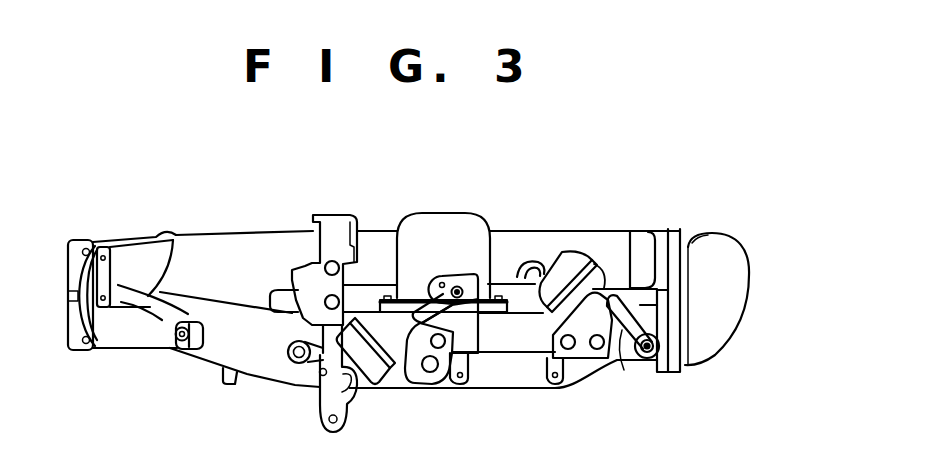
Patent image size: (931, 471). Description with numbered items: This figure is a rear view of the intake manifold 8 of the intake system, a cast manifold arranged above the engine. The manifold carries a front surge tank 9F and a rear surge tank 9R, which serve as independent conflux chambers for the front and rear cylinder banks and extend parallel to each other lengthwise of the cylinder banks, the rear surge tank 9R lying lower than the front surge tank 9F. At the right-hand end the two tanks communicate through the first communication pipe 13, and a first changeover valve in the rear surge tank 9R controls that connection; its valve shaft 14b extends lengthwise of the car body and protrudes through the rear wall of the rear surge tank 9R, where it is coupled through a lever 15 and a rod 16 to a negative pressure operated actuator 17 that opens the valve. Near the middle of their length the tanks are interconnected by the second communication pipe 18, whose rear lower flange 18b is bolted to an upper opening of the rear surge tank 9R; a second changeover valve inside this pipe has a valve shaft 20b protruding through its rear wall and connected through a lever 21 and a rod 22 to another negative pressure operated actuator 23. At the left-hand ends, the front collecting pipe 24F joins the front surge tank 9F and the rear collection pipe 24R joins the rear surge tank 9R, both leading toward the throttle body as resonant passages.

The intake manifold 8 is at (221, 234).
The front collecting pipe 24F is at (258, 234).
The rear collection pipe 24R is at (250, 378).
The negative pressure operated actuator 23 is at (373, 388).
The rod 22 is at (406, 370).
The rear lower flange 18b is at (496, 314).
The valve shaft 20b is at (430, 280).
The lever 21 is at (460, 282).
The second communication pipe 18 is at (443, 212).
The front surge tank 9F is at (533, 231).
The rear surge tank 9R is at (516, 388).
The negative pressure operated actuator 17 is at (576, 254).
The rod 16 is at (620, 362).
The lever 15 is at (647, 366).
The valve shaft 14b is at (682, 364).
The first communication pipe 13 is at (742, 314).